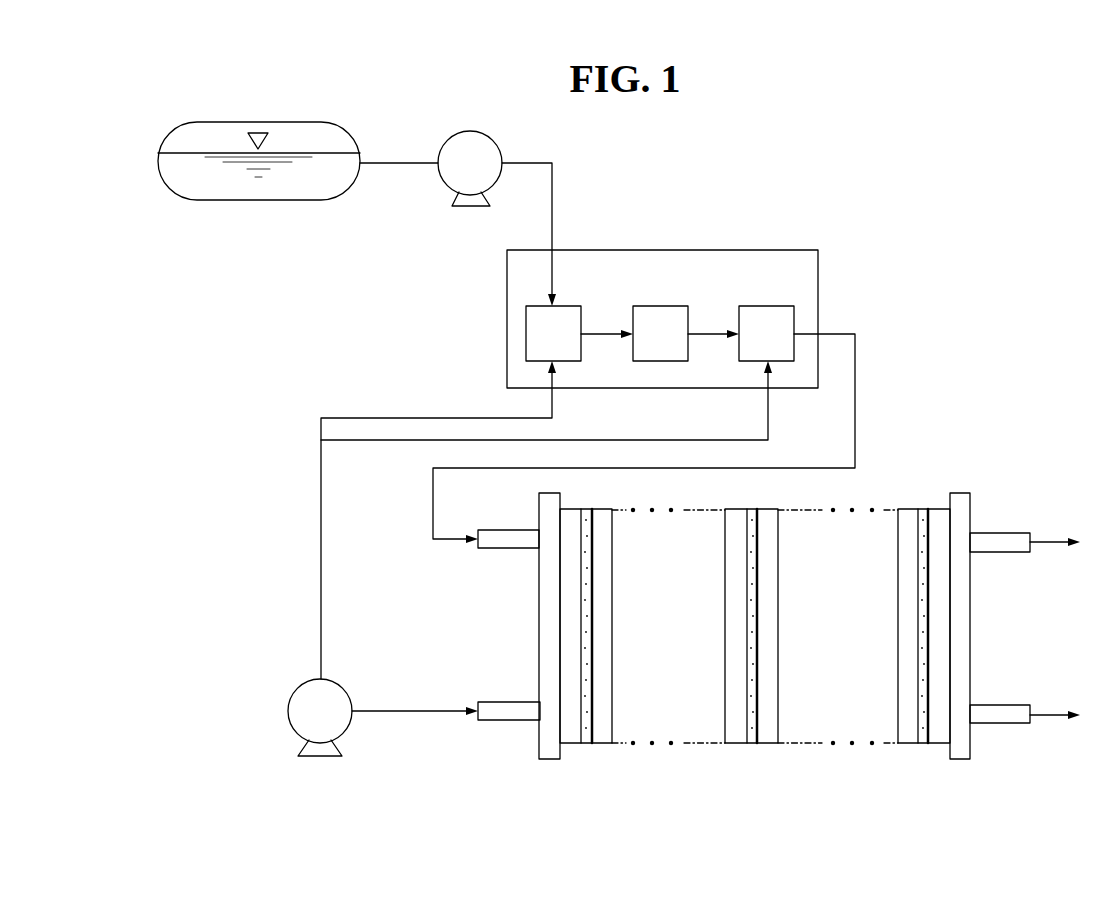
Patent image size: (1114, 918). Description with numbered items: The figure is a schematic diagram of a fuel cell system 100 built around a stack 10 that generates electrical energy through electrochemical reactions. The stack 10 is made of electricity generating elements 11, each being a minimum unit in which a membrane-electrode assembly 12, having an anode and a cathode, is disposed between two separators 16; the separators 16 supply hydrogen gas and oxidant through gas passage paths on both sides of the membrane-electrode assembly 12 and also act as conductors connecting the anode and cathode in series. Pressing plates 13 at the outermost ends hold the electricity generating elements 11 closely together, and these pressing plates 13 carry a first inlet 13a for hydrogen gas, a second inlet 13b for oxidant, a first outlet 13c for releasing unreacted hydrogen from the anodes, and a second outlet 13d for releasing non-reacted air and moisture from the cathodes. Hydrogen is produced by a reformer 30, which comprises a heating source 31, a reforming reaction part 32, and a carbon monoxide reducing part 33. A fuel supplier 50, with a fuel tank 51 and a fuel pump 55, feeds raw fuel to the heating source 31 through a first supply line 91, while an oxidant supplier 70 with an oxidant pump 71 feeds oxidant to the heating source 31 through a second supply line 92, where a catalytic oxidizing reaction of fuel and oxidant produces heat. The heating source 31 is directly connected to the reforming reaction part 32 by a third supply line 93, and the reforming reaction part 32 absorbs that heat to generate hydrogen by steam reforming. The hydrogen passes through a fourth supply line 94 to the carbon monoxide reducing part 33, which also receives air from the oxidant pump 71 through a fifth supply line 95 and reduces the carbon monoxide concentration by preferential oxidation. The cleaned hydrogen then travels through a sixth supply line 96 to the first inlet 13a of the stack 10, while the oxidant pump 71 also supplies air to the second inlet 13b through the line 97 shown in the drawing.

The fuel cell system 100 is at (679, 154).
The stack 10 is at (1040, 605).
The electricity generating element 11 is at (755, 686).
The membrane-electrode assembly 12 is at (752, 745).
The pressing plate 13 is at (550, 759).
The first inlet 13a is at (500, 530).
The second inlet 13b is at (508, 702).
The first outlet 13c is at (1008, 705).
The second outlet 13d is at (1008, 533).
The separator 16 is at (737, 745).
The reformer 30 is at (808, 236).
The heating source 31 is at (568, 305).
The reforming reaction part 32 is at (663, 305).
The carbon monoxide reducing part 33 is at (769, 305).
The fuel supplier 50 is at (200, 226).
The fuel tank 51 is at (220, 122).
The fuel pump 55 is at (487, 132).
The oxidant supplier 70 is at (372, 742).
The oxidant pump 71 is at (335, 679).
The first supply line 91 is at (560, 150).
The second supply line 92 is at (373, 417).
The third supply line 93 is at (597, 330).
The fourth supply line 94 is at (705, 330).
The fifth supply line 95 is at (768, 425).
The sixth supply line 96 is at (856, 437).
The oxidant supply line to stack 97 is at (403, 709).